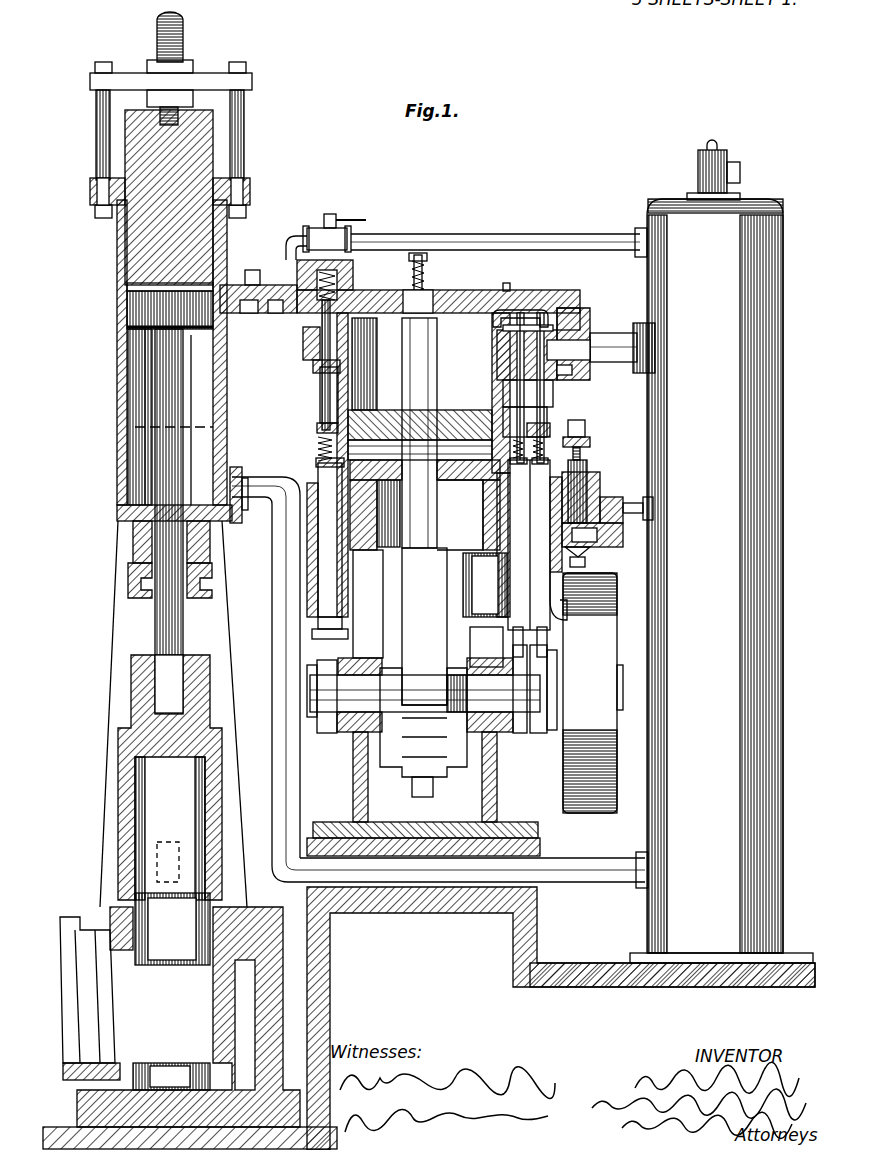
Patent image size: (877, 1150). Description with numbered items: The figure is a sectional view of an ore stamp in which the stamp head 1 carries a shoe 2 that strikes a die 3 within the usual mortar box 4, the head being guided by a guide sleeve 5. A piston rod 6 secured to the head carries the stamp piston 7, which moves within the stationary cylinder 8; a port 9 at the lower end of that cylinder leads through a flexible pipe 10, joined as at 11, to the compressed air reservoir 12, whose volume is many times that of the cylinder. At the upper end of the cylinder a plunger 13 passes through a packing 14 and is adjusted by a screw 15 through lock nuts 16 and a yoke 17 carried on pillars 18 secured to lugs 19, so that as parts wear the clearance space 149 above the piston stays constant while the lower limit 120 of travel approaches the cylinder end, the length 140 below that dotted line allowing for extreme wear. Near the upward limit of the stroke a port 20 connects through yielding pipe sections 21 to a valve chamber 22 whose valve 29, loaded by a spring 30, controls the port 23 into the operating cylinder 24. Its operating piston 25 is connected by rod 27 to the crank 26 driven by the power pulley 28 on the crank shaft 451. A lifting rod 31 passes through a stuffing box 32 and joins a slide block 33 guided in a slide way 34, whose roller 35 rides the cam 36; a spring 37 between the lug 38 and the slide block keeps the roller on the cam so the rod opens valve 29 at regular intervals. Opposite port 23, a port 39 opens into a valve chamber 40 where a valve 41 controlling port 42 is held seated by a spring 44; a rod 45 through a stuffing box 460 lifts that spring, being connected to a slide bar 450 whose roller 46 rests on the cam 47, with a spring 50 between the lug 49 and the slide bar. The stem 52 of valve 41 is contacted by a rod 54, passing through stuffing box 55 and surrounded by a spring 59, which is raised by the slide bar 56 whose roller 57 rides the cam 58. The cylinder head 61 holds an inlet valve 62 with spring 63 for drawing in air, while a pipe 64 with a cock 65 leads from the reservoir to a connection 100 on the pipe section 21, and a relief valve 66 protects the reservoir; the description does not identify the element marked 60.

The stamp head 1 is at (170, 828).
The shoe 2 is at (172, 929).
The die 3 is at (173, 1068).
The mortar box 4 is at (225, 1040).
The guide sleeve 5 is at (128, 823).
The piston rod 6 is at (165, 626).
The piston 7 is at (135, 312).
The stationary cylinder 8 is at (117, 396).
The port 9 is at (242, 478).
The pipe 10 is at (283, 575).
The connection 11 is at (610, 860).
The compressed air reservoir 12 is at (672, 590).
The plunger 13 is at (145, 250).
The packing 14 is at (100, 198).
The screw 15 is at (158, 36).
The lock nuts 16 is at (192, 88).
The yoke 17 is at (100, 83).
The pillars 18 is at (97, 133).
The lugs 19 is at (95, 190).
The port 20 is at (226, 318).
The pipe sections 21 is at (252, 270).
The valve chamber 22 is at (353, 270).
The port 23 is at (358, 330).
The operating cylinder 24 is at (332, 392).
The operating piston 25 is at (390, 412).
The crank 26 is at (466, 664).
The rod 27 is at (418, 601).
The power pulley 28 is at (593, 693).
The valve 29 is at (355, 286).
The spring 30 is at (352, 262).
The lifting rod 31 is at (320, 411).
The stuffing box 32 is at (302, 350).
The slide block 33 is at (314, 466).
The slide way 34 is at (375, 627).
The roller 35 is at (372, 645).
The cam 36 is at (333, 740).
The spring 37 is at (318, 449).
The lug 38 is at (317, 429).
The port 39 is at (503, 328).
The valve chamber 40 is at (548, 308).
The valve 41 is at (582, 313).
The port 42 is at (592, 333).
The spring 44 is at (512, 308).
The rod 45 is at (510, 350).
The roller 46 is at (512, 650).
The cam 47 is at (525, 740).
The lug 49 is at (556, 440).
The spring 50 is at (425, 505).
The stem 52 is at (568, 351).
The rod 54 is at (553, 412).
The stuffing box 55 is at (580, 390).
The slide bar 56 is at (560, 608).
The roller 57 is at (547, 648).
The cam 58 is at (548, 740).
The spring 59 is at (563, 470).
The valve rod housing 60 is at (556, 590).
The head 61 is at (504, 290).
The inlet valve 62 is at (422, 314).
The spring 63 is at (430, 262).
The pipe 64 is at (600, 234).
The cock 65 is at (333, 214).
The relief valve 66 is at (712, 168).
The connection 100 is at (318, 222).
The lower limit 120 is at (128, 446).
The length 140 is at (143, 481).
The clearance space 149 is at (130, 289).
The slide bar 450 is at (512, 572).
The crank shaft 451 is at (466, 702).
The stuffing box 460 is at (505, 385).